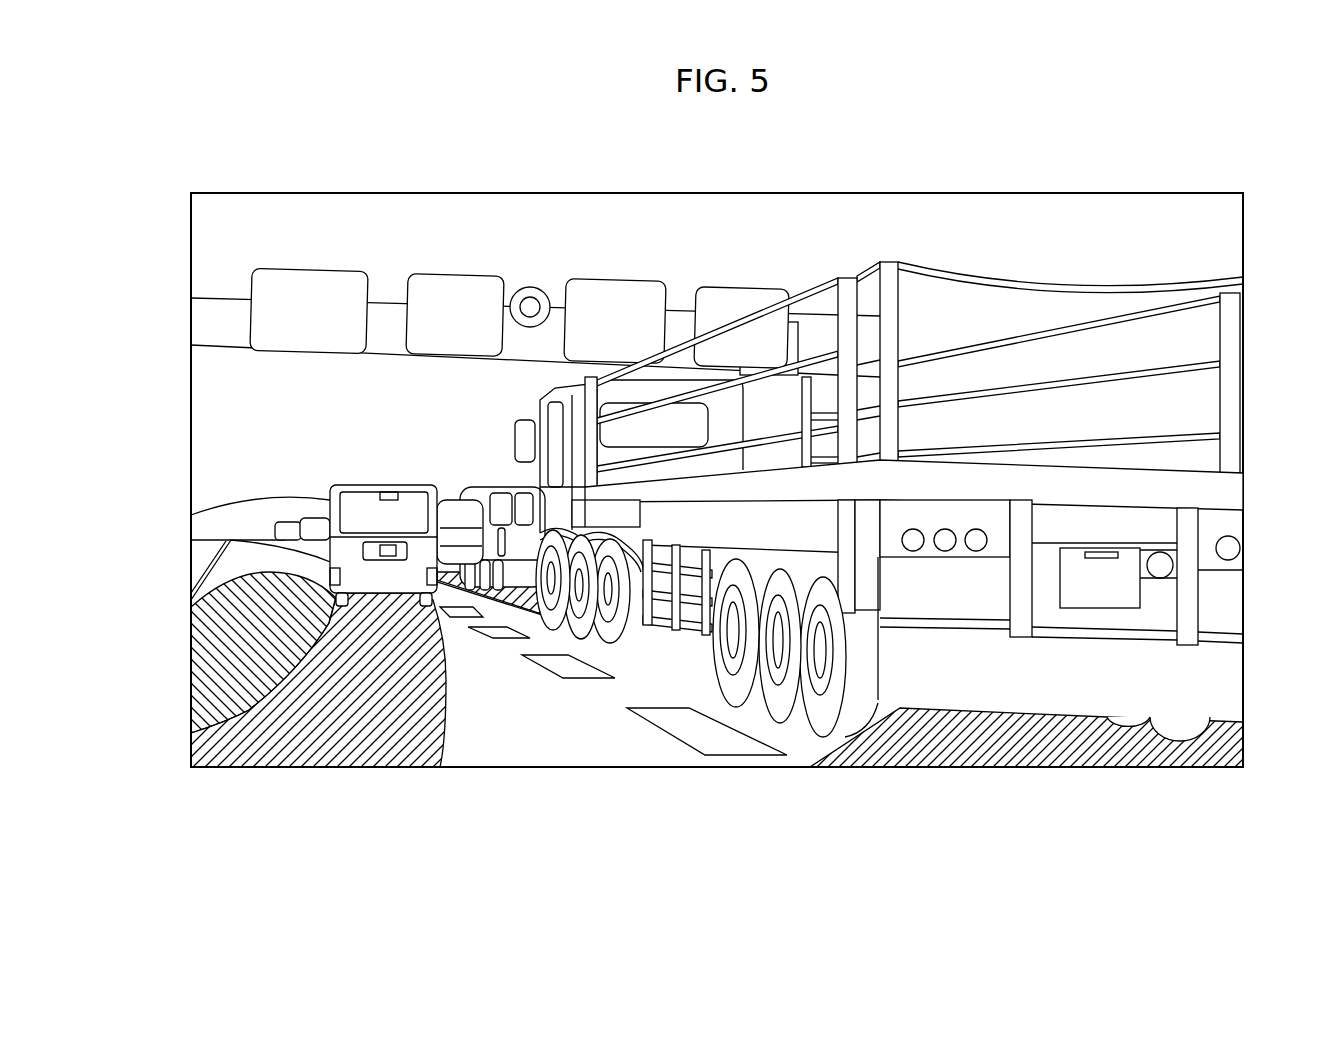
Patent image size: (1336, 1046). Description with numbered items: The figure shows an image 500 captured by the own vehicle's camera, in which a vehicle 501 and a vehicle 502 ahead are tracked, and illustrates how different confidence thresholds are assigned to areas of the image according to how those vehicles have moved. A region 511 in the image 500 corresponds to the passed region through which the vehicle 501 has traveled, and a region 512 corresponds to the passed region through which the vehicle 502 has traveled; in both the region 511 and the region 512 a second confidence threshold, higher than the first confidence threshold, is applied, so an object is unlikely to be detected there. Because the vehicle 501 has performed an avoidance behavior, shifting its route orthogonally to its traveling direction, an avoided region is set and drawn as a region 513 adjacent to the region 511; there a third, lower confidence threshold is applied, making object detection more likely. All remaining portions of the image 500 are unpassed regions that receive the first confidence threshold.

The image 500 is at (1228, 800).
The vehicle 501 is at (360, 508).
The vehicle 502 is at (453, 513).
The region 511 is at (349, 733).
The region 512 is at (527, 608).
The region 513 is at (235, 667).